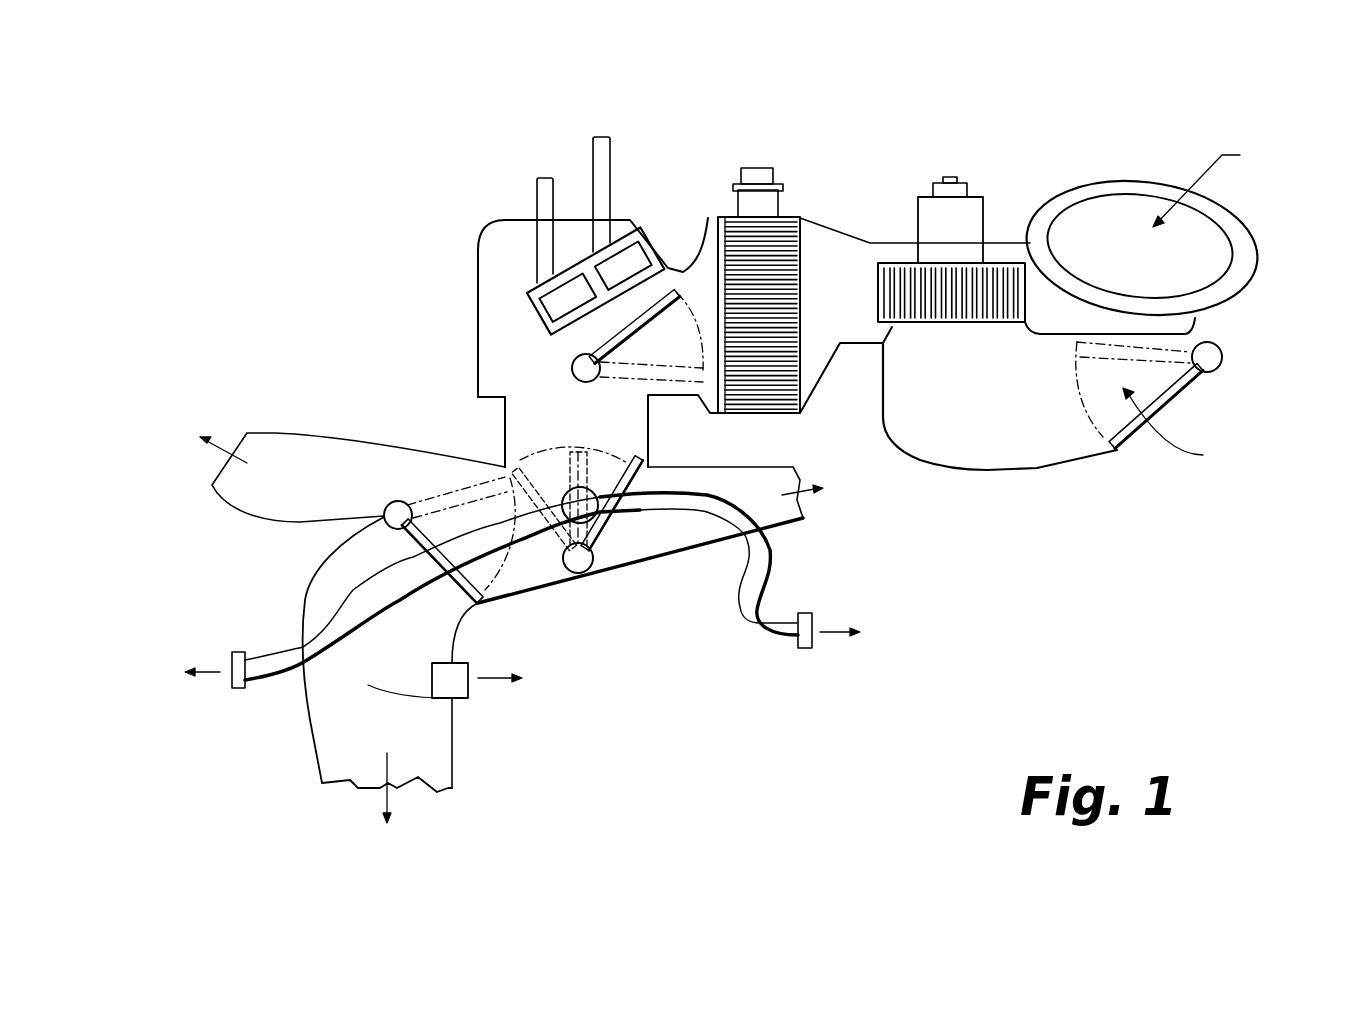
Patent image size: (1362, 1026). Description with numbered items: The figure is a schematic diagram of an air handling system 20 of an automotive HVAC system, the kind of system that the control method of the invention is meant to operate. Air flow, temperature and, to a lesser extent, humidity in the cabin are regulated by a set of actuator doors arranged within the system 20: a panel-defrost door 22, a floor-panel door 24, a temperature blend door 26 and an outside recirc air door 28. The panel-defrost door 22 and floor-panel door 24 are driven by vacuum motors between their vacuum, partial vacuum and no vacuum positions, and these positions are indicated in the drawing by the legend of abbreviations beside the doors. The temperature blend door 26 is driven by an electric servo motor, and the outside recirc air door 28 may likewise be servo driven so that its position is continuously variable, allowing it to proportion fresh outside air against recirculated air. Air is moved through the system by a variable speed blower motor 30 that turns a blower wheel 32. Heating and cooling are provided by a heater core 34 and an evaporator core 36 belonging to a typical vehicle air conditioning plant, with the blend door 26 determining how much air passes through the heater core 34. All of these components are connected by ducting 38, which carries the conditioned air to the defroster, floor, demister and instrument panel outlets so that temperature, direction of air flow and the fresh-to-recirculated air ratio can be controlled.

The air handling system 20 is at (1082, 153).
The panel-defrost door 22 is at (443, 558).
The floor-panel door 24 is at (617, 527).
The temperature blend door 26 is at (610, 333).
The outside recirc air door 28 is at (1182, 402).
The variable speed blower motor 30 is at (914, 232).
The blower wheel 32 is at (1012, 260).
The heater core 34 is at (533, 318).
The evaporator core 36 is at (805, 267).
The ducting 38 is at (987, 470).